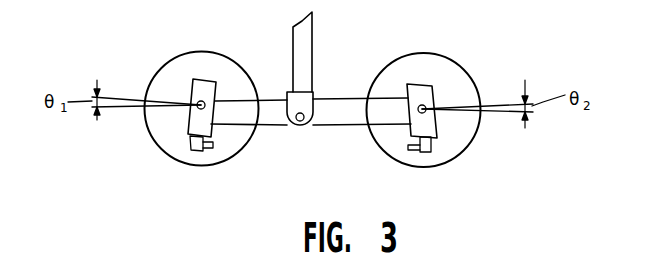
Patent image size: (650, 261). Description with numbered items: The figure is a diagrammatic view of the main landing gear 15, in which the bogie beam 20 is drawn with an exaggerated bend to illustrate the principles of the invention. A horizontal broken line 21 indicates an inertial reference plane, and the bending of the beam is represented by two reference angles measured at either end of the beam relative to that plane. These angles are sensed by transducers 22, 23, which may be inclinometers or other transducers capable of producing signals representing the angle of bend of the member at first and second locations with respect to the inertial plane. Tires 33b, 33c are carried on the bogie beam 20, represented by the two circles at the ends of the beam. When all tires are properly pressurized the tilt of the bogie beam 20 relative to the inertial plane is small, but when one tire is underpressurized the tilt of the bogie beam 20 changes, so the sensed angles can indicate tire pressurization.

The main landing gear 15 is at (278, 126).
The bogie beam 20 is at (350, 113).
The horizontal broken line 21 is at (502, 112).
The transducer 22 is at (196, 151).
The transducer 23 is at (432, 146).
The tire 33b is at (450, 73).
The tire 33c is at (178, 73).